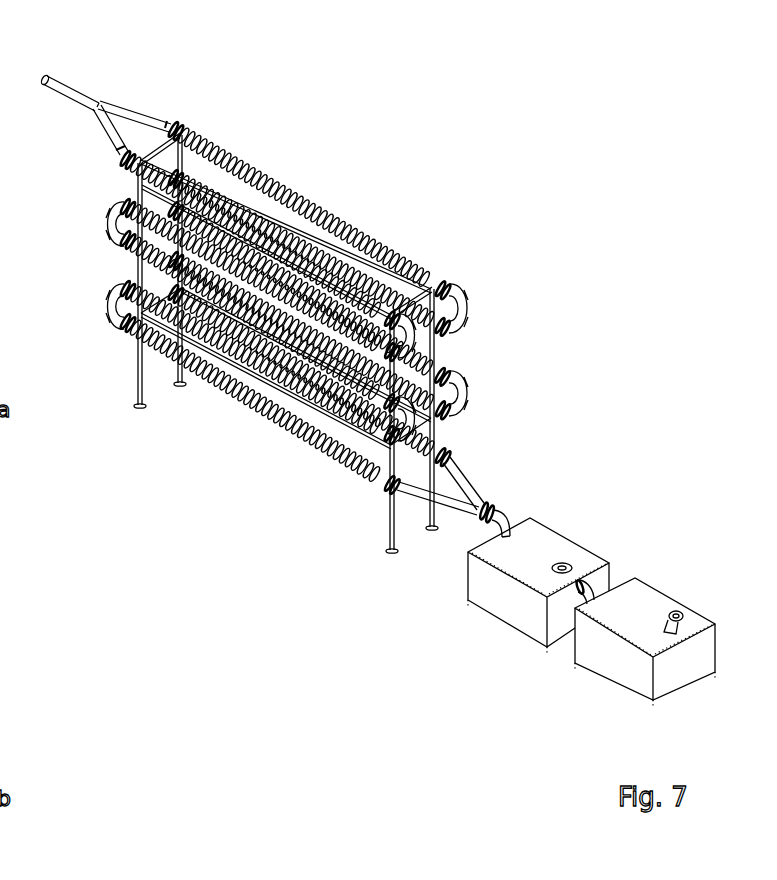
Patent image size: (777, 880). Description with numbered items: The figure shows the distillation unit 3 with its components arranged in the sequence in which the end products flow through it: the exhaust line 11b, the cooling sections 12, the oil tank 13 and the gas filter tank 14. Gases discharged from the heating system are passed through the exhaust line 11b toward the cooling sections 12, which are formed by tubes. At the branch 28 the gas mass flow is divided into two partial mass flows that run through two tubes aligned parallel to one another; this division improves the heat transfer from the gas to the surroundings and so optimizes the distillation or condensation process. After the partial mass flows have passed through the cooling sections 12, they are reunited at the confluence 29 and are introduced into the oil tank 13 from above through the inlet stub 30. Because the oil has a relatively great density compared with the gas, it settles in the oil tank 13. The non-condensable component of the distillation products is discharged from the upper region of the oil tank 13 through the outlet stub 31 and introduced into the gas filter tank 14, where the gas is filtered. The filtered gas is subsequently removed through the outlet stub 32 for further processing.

The distillation unit 3 is at (555, 205).
The cooling section 12 is at (352, 230).
The branch 28 is at (97, 107).
The exhaust line 11b is at (72, 97).
The confluence 29 is at (484, 503).
The inlet stub 30 is at (512, 525).
The oil tank 13 is at (550, 540).
The outlet stub 31 is at (593, 595).
The gas filter tank 14 is at (640, 602).
The outlet stub 32 is at (683, 617).